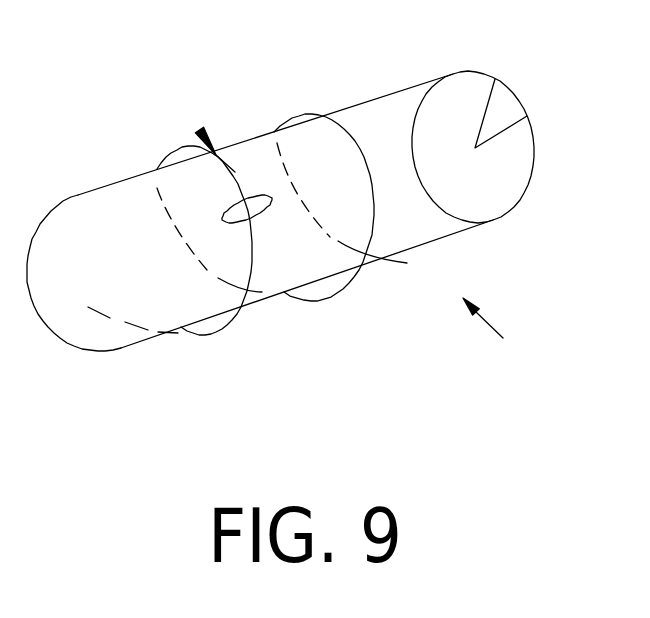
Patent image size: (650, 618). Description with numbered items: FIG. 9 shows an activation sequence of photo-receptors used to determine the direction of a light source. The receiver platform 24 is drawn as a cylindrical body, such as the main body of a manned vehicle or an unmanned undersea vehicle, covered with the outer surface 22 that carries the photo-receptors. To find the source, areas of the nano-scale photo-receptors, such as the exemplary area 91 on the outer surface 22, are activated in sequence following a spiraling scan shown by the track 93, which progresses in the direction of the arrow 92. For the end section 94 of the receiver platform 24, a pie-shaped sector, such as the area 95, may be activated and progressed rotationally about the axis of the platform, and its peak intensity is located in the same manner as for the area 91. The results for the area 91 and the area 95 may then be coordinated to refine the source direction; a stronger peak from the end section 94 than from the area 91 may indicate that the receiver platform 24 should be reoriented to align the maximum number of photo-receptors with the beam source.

The outer surface 22 is at (387, 96).
The receiver platform 24 is at (509, 342).
The area 91 is at (266, 219).
The arrow 92 is at (213, 147).
The track 93 is at (223, 328).
The end section 94 is at (502, 177).
The area 95 is at (503, 130).